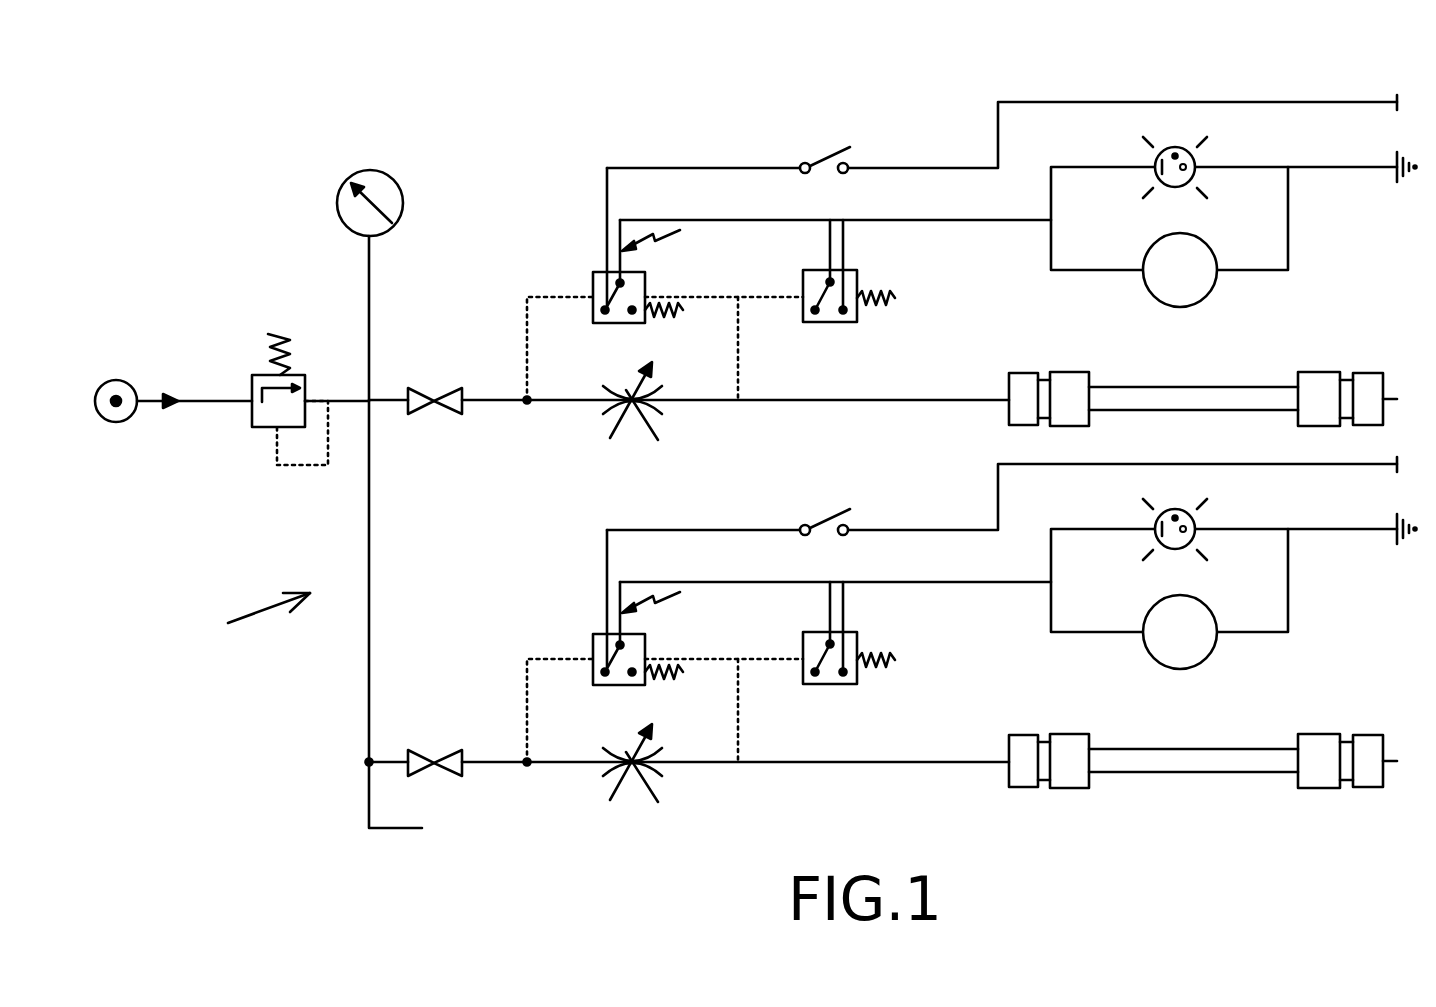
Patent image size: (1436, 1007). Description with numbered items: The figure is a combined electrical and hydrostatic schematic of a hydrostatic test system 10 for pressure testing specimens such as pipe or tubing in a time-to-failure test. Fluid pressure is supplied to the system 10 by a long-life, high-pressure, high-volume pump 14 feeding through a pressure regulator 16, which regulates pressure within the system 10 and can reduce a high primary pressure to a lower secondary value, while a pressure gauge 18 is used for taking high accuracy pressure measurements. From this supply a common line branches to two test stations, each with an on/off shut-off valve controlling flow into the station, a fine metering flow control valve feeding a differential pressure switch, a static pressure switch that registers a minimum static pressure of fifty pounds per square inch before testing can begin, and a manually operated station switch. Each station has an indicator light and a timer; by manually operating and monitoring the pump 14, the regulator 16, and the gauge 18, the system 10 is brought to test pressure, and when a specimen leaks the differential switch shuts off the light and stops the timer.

The hydrostatic test system 10 is at (247, 628).
The pump 14 is at (112, 380).
The pressure regulator 16 is at (262, 430).
The pressure gauge 18 is at (368, 168).